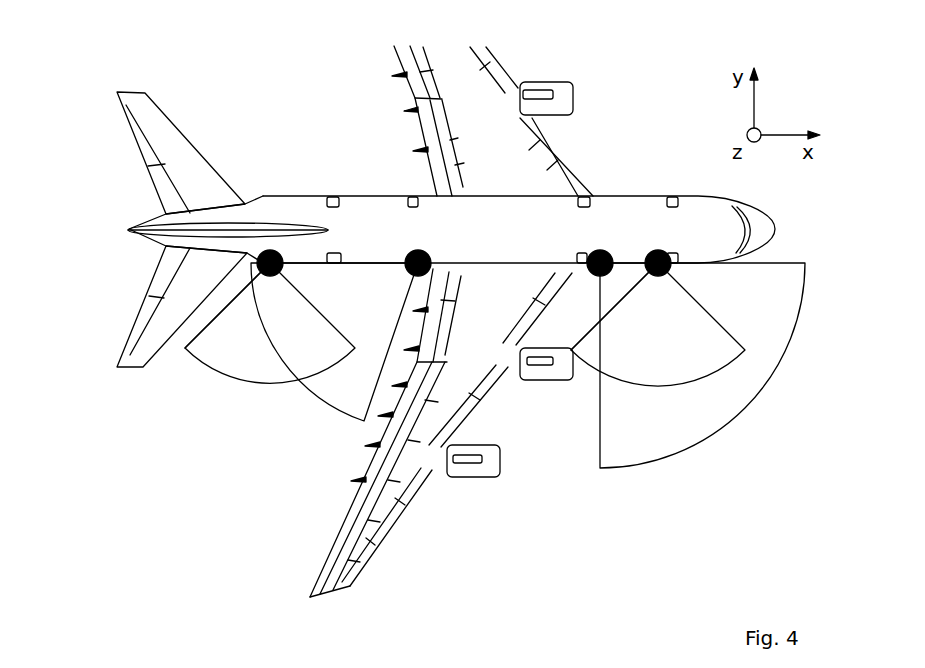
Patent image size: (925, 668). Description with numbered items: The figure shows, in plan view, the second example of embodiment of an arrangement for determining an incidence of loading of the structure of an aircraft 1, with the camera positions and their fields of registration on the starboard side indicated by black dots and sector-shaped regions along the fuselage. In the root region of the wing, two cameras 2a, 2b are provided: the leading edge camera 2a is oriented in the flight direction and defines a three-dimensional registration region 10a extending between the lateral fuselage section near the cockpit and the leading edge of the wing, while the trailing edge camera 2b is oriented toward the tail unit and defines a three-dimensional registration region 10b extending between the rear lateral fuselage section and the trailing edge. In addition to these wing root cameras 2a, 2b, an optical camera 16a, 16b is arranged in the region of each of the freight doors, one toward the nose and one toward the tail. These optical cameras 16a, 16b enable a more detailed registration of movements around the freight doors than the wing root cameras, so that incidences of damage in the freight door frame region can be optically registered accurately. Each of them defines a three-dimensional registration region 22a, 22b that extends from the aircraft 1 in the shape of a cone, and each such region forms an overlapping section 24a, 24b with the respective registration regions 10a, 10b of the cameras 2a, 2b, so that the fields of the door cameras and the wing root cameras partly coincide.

The aircraft 1 is at (763, 193).
The leading edge camera 2a is at (600, 263).
The trailing edge camera 2b is at (418, 263).
The registration region 10a is at (650, 418).
The registration region 10b is at (343, 395).
The optical camera 16a is at (658, 263).
The optical camera 16b is at (270, 263).
The registration region 22a is at (597, 343).
The registration region 22b is at (223, 353).
The overlapping section 24a is at (698, 357).
The overlapping section 24b is at (297, 355).